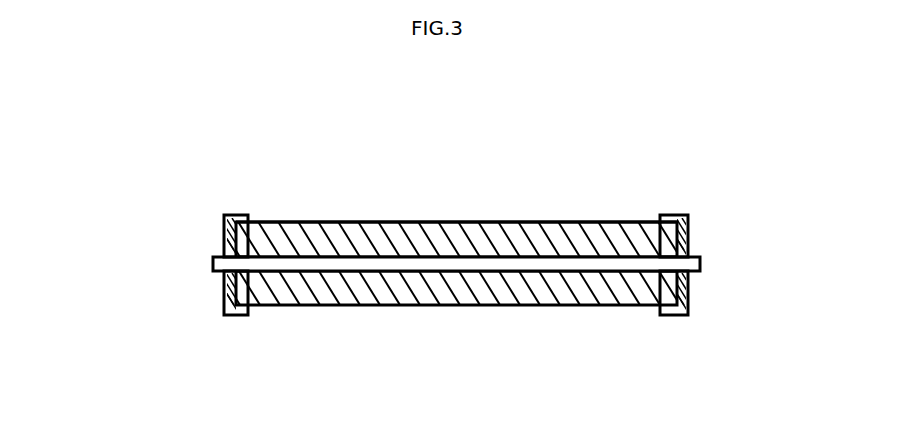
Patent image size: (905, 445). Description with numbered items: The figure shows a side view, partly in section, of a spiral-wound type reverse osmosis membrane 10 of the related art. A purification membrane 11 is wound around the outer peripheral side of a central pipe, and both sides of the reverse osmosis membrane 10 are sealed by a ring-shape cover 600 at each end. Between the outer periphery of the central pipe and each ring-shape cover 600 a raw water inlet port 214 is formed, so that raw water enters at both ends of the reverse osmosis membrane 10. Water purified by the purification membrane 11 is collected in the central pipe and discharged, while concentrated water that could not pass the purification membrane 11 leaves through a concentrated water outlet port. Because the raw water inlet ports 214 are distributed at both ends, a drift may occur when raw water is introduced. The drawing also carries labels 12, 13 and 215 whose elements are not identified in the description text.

The reverse osmosis membrane 10 is at (170, 189).
The purification membrane 11 is at (540, 245).
The first frame 12 is at (223, 298).
The second frame 13 is at (688, 313).
The raw water inlet port 214 is at (227, 250).
The surface of panel 215 is at (358, 222).
The ring-shape cover 600 is at (222, 215).